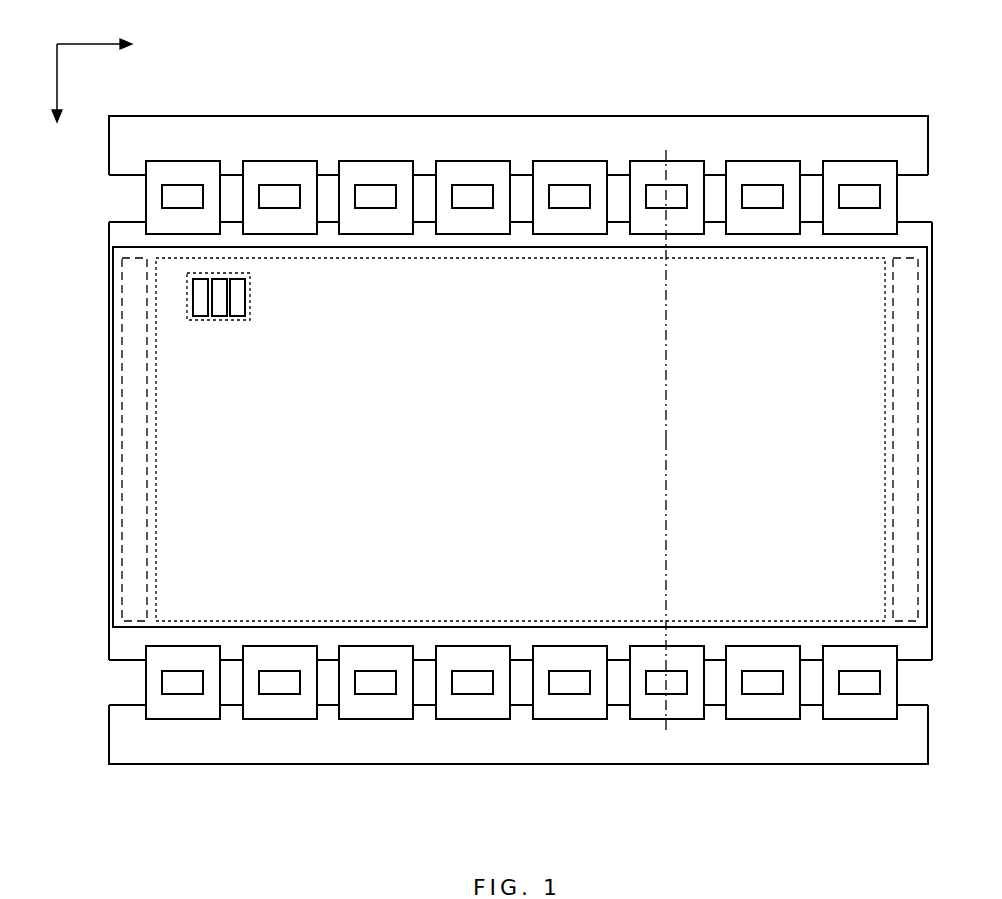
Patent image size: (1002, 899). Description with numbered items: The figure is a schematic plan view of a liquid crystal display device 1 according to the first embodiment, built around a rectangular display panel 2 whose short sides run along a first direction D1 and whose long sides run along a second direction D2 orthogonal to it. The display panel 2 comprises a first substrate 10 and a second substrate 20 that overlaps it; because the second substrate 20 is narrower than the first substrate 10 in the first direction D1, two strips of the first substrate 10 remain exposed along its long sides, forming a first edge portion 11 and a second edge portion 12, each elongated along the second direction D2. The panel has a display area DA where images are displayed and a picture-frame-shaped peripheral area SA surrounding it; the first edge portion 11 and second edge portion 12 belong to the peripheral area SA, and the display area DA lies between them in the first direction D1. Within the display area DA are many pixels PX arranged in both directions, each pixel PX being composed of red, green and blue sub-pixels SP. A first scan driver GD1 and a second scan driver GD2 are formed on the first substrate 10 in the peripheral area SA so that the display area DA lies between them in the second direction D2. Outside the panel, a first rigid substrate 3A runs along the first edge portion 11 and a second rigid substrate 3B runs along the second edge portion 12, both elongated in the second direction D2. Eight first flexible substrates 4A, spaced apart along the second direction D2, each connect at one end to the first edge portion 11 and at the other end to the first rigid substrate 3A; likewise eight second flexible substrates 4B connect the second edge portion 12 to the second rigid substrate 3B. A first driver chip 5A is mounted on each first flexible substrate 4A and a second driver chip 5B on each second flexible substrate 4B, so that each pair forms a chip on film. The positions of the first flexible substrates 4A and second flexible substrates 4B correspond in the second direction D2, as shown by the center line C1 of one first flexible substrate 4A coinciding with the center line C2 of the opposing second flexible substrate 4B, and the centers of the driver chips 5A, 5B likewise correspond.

The display device 1 is at (916, 88).
The display panel 2 is at (67, 632).
The first substrate 10 is at (130, 660).
The second substrate 20 is at (128, 628).
The first edge portion 11 is at (938, 222).
The second edge portion 12 is at (938, 627).
The first rigid substrate 3A is at (519, 116).
The second rigid substrate 3B is at (520, 764).
The first flexible substrate 4A is at (195, 161).
The second flexible substrate 4B is at (200, 719).
The first driver chip 5A is at (172, 185).
The second driver chip 5B is at (174, 694).
The center line of the first flexible substrate C1 is at (664, 282).
The center line of the second flexible substrate C2 is at (665, 598).
The peripheral area SA is at (122, 233).
The display area DA is at (156, 300).
The pixel PX is at (252, 297).
The sub-pixel SP is at (197, 316).
The first scan driver GD1 is at (122, 413).
The second scan driver GD2 is at (918, 413).
The first direction D1 is at (54, 97).
The second direction D2 is at (112, 45).